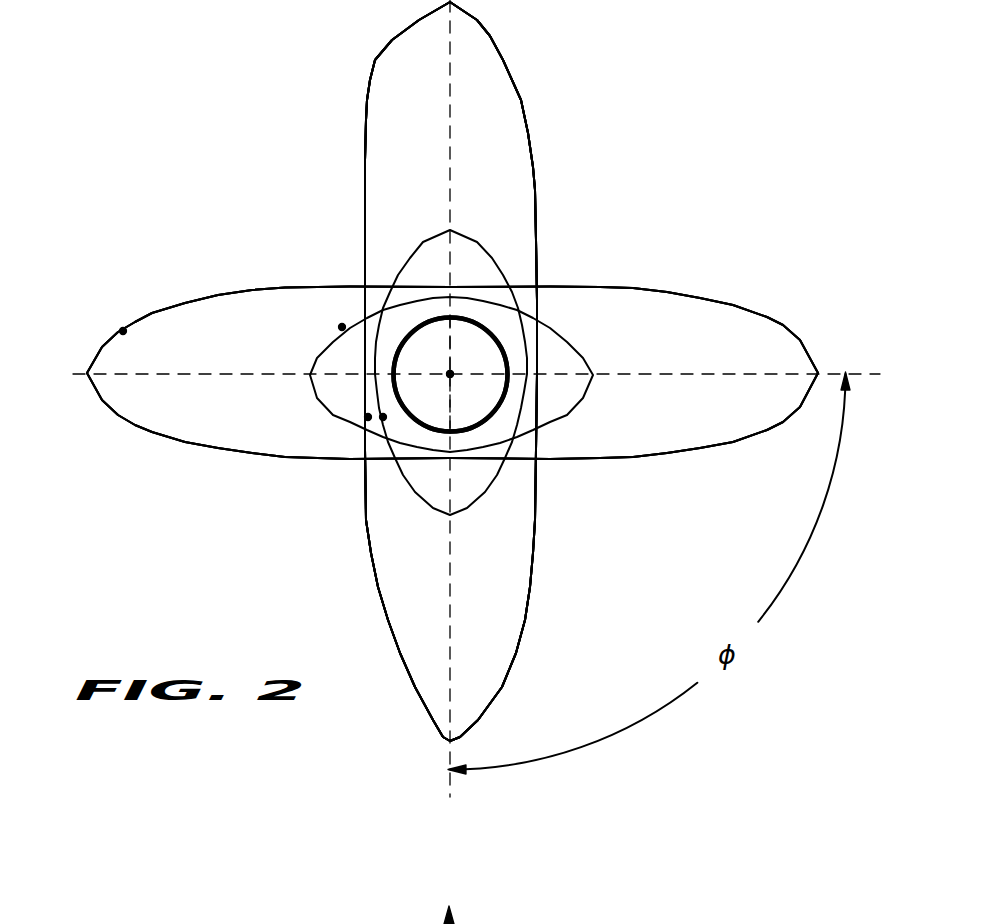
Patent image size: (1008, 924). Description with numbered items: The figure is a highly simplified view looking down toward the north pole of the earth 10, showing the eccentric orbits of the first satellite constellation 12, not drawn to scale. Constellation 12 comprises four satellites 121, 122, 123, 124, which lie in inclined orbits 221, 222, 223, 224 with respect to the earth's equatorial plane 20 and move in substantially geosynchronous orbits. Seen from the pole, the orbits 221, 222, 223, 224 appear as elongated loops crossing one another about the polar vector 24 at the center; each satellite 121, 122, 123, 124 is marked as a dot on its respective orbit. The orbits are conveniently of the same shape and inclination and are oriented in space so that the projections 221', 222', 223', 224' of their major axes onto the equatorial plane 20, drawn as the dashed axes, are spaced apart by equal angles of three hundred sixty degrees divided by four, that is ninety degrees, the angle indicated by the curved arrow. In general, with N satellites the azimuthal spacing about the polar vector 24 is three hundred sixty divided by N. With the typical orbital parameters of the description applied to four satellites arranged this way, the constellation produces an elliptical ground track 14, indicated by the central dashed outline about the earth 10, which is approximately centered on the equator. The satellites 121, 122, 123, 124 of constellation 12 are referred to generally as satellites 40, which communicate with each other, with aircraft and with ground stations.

The earth 10 is at (502, 362).
The first satellite constellation 12 is at (216, 152).
The elliptical ground track 14 is at (422, 393).
The equatorial plane 20 is at (467, 312).
The polar vector 24 is at (452, 372).
The satellites 40 is at (244, 566).
The satellite 121 is at (383, 419).
The satellite 122 is at (122, 330).
The satellite 123 is at (366, 416).
The satellite 124 is at (341, 327).
The inclined orbit 221 is at (480, 371).
The projection of major axis 221' is at (485, 187).
The inclined orbit 222 is at (452, 359).
The projection of major axis 222' is at (261, 355).
The inclined orbit 223 is at (478, 371).
The projection of major axis 223' is at (484, 585).
The inclined orbit 224 is at (452, 360).
The projection of major axis 224' is at (665, 357).